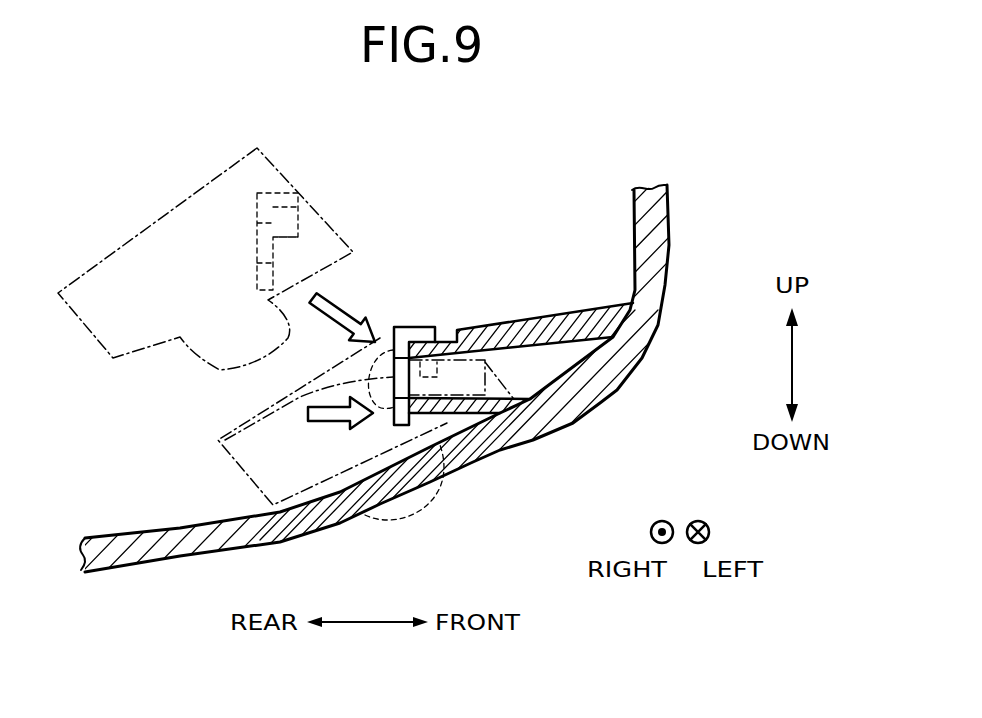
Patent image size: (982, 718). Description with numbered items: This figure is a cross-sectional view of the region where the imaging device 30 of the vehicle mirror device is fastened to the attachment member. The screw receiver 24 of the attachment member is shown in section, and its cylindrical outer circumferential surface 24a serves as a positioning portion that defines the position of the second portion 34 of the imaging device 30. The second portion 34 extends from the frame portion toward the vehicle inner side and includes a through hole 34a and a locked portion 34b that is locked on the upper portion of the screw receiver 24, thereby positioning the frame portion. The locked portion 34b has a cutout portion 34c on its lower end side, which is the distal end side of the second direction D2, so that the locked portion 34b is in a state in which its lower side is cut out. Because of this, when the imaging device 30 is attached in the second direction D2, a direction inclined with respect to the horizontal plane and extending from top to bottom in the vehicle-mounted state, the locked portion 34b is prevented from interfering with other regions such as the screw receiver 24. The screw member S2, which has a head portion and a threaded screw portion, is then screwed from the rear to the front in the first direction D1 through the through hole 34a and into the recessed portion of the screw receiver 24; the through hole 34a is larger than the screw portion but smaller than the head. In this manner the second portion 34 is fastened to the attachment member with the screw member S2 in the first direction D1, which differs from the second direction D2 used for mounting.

The screw receiver 24 is at (458, 330).
The cylindrical outer circumferential surface 24a is at (428, 402).
The imaging device 30 is at (86, 276).
The second portion 34 is at (259, 173).
The through hole 34a is at (393, 369).
The locked portion 34b is at (418, 337).
The cutout portion 34c is at (430, 378).
The screw member S2 is at (217, 447).
The first direction D1 is at (336, 424).
The second direction D2 is at (343, 306).